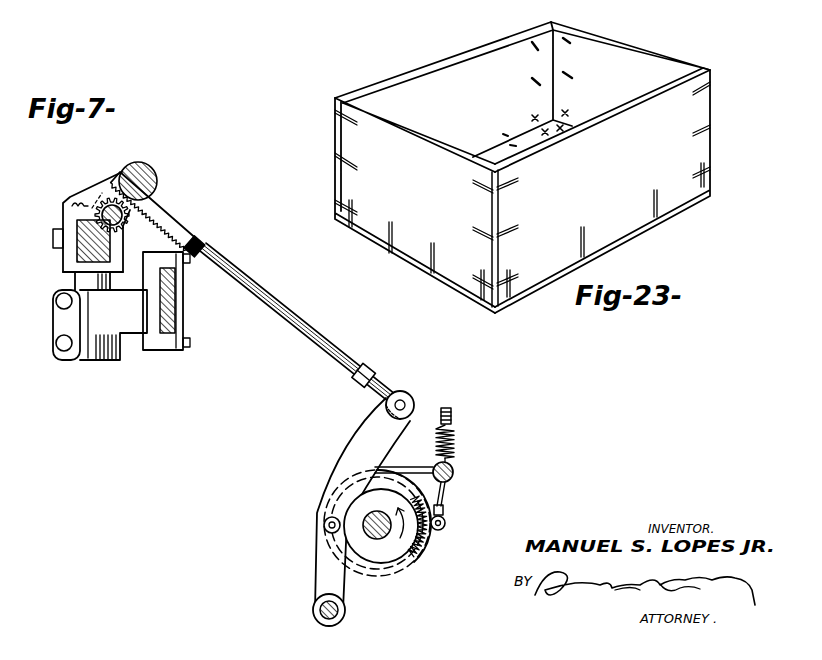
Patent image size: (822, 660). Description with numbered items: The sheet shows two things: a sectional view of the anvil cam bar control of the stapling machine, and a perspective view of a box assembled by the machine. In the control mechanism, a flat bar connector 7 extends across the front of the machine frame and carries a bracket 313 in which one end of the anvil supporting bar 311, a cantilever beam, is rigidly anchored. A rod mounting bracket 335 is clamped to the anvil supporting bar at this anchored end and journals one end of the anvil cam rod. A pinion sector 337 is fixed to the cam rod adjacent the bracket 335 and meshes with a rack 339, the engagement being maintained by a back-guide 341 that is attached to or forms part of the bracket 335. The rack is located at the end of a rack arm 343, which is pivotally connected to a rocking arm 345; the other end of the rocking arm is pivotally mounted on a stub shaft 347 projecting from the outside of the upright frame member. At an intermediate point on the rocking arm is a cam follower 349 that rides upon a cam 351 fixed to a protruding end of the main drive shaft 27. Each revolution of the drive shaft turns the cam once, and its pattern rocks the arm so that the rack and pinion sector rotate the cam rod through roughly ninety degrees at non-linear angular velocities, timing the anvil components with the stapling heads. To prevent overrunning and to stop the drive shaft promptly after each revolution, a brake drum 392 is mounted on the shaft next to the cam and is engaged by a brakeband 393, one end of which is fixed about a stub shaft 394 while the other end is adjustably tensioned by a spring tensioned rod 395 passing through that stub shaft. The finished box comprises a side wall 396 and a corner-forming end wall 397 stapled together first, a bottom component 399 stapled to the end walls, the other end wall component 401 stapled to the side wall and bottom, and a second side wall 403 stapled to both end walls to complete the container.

In FIG. 7, the flat bar connector 7 is at (176, 303).
In FIG. 7, the main drive shaft 27 is at (383, 515).
In FIG. 7, the anvil supporting bar 311 is at (80, 252).
In FIG. 7, the bracket 313 is at (72, 318).
In FIG. 7, the rod mounting bracket 335 is at (83, 193).
In FIG. 7, the pinion sector 337 is at (108, 197).
In FIG. 7, the rack 339 is at (170, 216).
In FIG. 7, the back-guide 341 is at (140, 168).
In FIG. 7, the rack arm 343 is at (258, 293).
In FIG. 7, the rocking arm 345 is at (372, 432).
In FIG. 7, the stub shaft 347 is at (313, 608).
In FIG. 7, the cam follower 349 is at (322, 513).
In FIG. 7, the cam 351 is at (385, 548).
In FIG. 7, the brake drum 392 is at (375, 565).
In FIG. 7, the brakeband 393 is at (430, 538).
In FIG. 7, the stub shaft 394 is at (453, 472).
In FIG. 7, the spring tensioned rod 395 is at (447, 495).
In FIG. 23, the side wall 396 is at (697, 113).
In FIG. 23, the end wall 397 is at (350, 142).
In FIG. 23, the bottom component 399 is at (495, 124).
In FIG. 23, the end wall component 401 is at (620, 58).
In FIG. 23, the second side wall 403 is at (467, 37).